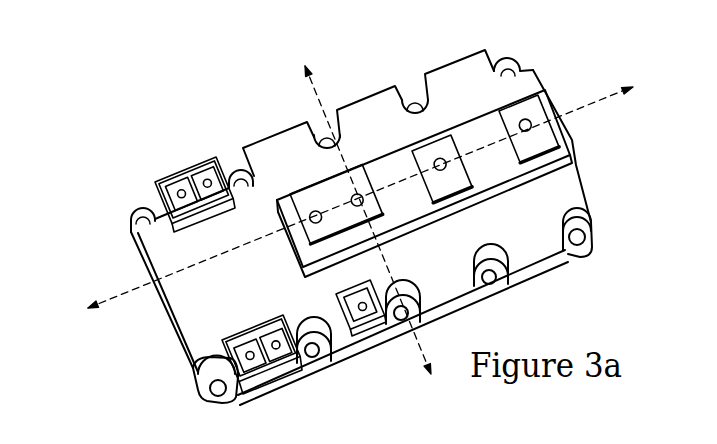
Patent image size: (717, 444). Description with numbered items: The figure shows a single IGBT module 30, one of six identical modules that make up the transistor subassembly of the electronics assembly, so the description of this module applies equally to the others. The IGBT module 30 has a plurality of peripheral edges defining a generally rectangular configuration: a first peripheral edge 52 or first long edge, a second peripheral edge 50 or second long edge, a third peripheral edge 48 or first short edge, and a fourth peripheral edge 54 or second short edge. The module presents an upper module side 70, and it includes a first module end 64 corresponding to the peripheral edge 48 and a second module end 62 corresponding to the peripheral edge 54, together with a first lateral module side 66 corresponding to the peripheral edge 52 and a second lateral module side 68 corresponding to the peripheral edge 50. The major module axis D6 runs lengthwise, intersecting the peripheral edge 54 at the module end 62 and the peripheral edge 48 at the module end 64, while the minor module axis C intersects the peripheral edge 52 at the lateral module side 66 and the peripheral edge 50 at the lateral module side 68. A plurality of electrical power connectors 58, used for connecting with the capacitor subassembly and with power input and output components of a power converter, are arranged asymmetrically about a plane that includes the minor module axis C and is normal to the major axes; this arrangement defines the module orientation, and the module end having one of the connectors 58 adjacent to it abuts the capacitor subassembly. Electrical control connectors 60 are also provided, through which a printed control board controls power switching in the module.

The IGBT module 30 is at (82, 196).
The third peripheral edge 48 is at (172, 327).
The second peripheral edge 50 is at (263, 140).
The first peripheral edge 52 is at (440, 318).
The fourth peripheral edge 54 is at (578, 166).
The electrical power connectors 58 is at (300, 200).
The electrical control connectors 60 is at (168, 184).
The second module end 62 is at (584, 145).
The first module end 64 is at (134, 278).
The first lateral module side 66 is at (347, 368).
The second lateral module side 68 is at (359, 90).
The upper module side 70 is at (520, 262).
The minor module axis C is at (418, 345).
The major module axis D6 is at (577, 105).